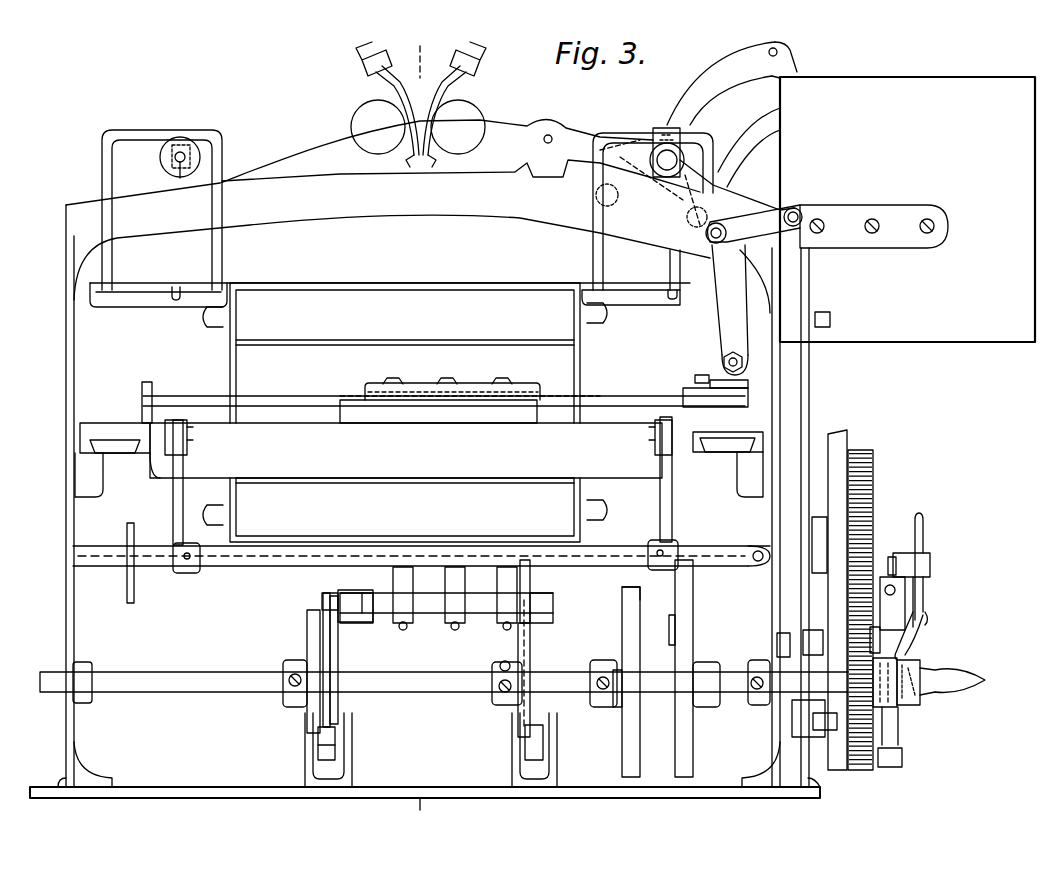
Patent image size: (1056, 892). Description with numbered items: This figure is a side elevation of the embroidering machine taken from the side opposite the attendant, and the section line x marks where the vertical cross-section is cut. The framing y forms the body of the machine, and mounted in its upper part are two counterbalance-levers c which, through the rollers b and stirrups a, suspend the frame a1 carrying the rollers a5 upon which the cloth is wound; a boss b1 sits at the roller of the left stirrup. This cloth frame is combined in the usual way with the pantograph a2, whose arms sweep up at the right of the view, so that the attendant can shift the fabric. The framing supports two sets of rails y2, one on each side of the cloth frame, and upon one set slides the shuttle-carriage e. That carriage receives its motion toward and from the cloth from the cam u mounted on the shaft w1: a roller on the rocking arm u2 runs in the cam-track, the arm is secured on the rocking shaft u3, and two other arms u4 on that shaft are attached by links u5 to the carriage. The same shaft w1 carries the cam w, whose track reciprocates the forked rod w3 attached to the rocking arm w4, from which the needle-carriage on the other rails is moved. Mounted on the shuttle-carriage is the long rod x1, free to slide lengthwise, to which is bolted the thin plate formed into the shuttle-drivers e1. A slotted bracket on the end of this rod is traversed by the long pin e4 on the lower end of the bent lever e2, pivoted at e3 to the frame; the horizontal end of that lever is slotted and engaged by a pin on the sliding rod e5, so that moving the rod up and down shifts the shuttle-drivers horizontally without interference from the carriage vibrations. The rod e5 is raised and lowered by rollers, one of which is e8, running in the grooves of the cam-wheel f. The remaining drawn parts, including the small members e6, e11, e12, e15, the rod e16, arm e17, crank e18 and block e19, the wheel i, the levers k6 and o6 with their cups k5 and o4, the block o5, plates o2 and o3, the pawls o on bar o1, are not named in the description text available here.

The stirrups a is at (160, 130).
The frame a1 is at (390, 404).
The pantograph a2 is at (733, 177).
The rollers a5 is at (405, 412).
The rollers b is at (651, 177).
The pivot boss b1 is at (158, 159).
The counterbalance-levers c is at (418, 104).
The shuttle-carriage e is at (406, 437).
The shuttle-drivers e1 is at (462, 390).
The bent lever e2 is at (828, 280).
The pivot e3 is at (722, 234).
The pin e4 is at (723, 350).
The sliding rod e5 is at (815, 517).
The block e6 is at (808, 718).
The roller e8 is at (825, 733).
The block e11 is at (785, 645).
The block e12 is at (816, 642).
The block e15 is at (876, 640).
The rod e16 is at (924, 530).
The arm e17 is at (918, 632).
The crank e18 is at (918, 715).
The block e19 is at (903, 770).
The cam-wheel f is at (837, 587).
The gear i is at (842, 610).
The cup k5 is at (534, 750).
The lever k6 is at (515, 657).
The pawl o is at (455, 598).
The bar o1 is at (446, 608).
The plate o2 is at (338, 627).
The plate o3 is at (338, 658).
The cup o4 is at (328, 750).
The block o5 is at (350, 745).
The plate o6 is at (305, 628).
The cam u is at (684, 668).
The rocking arm u2 is at (668, 630).
The rocking shaft u3 is at (262, 570).
The arms u4 is at (434, 495).
The links u5 is at (423, 445).
The cam w is at (631, 682).
The shaft w1 is at (444, 683).
The rod w3 is at (615, 665).
The rocking arm w4 is at (620, 590).
The section line x is at (416, 429).
The long rod x1 is at (444, 401).
The framing y is at (425, 458).
The rails y2 is at (419, 460).